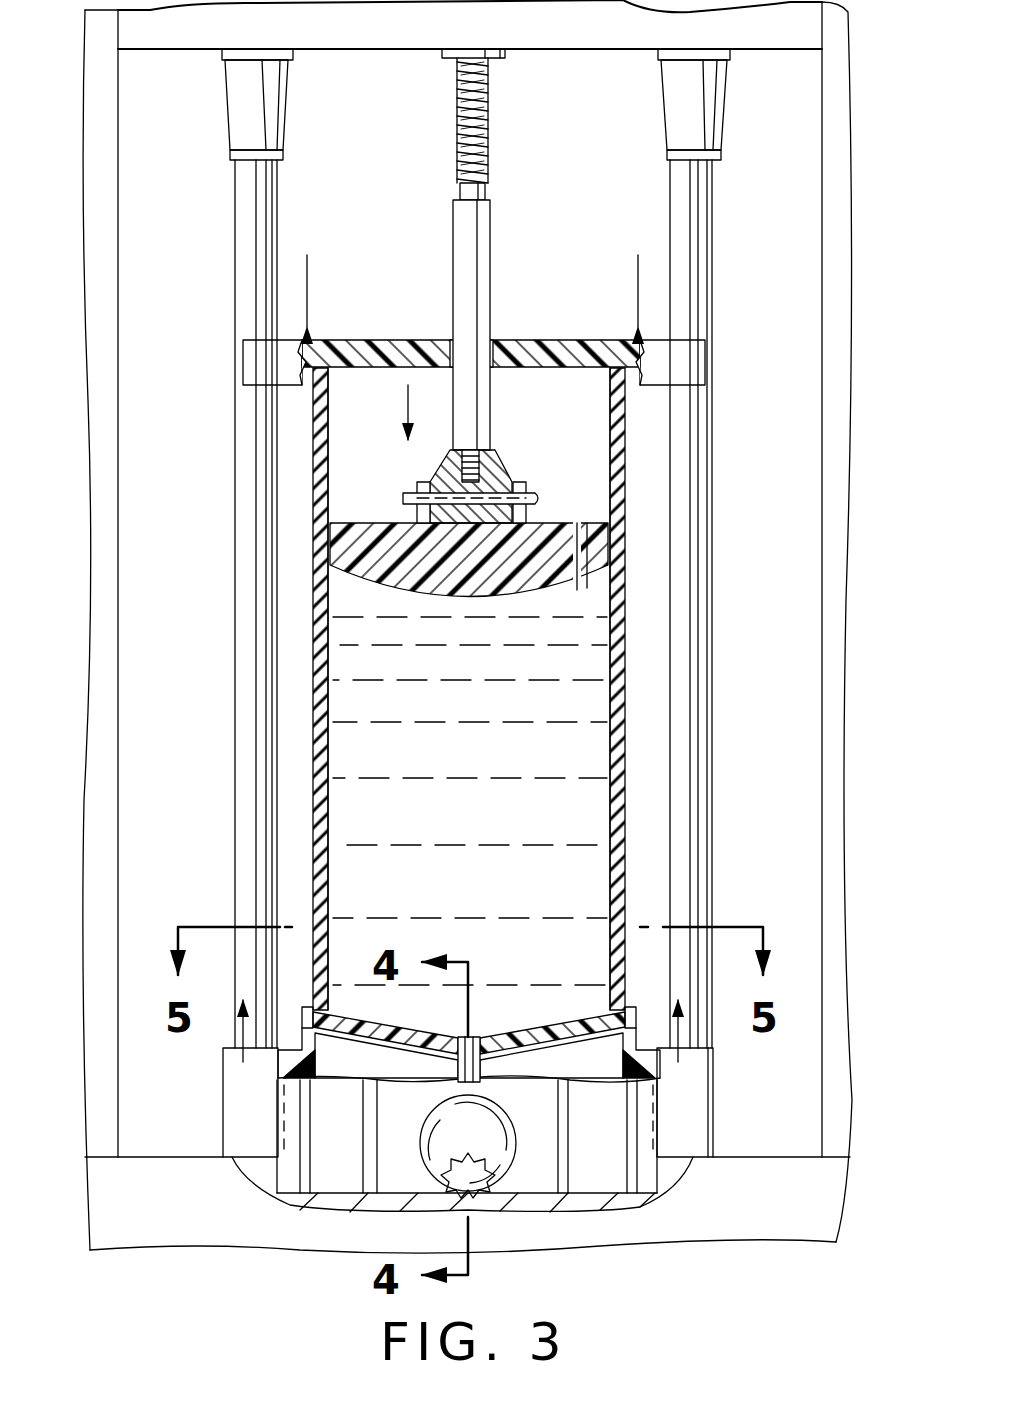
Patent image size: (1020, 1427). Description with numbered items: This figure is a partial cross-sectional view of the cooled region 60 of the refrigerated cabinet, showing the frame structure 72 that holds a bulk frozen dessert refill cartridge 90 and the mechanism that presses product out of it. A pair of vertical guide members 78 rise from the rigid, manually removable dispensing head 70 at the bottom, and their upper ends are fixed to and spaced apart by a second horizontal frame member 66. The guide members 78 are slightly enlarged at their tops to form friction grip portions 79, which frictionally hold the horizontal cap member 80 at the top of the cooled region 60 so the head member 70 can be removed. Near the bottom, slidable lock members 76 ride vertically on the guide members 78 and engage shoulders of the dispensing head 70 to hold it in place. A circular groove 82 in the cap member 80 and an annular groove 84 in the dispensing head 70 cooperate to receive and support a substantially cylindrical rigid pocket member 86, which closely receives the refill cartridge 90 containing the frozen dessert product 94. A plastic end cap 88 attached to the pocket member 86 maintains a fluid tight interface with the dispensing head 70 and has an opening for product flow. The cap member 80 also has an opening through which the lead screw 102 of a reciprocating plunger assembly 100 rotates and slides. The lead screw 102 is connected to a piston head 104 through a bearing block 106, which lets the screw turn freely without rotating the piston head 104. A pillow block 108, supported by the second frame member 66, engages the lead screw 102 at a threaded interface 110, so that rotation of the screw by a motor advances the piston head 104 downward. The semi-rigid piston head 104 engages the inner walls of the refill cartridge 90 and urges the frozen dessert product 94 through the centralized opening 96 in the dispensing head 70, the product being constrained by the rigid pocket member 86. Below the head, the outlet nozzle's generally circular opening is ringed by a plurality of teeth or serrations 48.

The teeth or serrations 48 is at (466, 1162).
The cooled region 60 is at (590, 280).
The second horizontal frame member 66 is at (492, 21).
The dispensing head 70 is at (606, 1157).
The frame structure 72 is at (430, 333).
The slidable lock members 76 is at (269, 1105).
The guide members 78 is at (236, 535).
The friction grip portions 79 is at (247, 100).
The horizontal cap member 80 is at (523, 353).
The circular groove 82 is at (330, 398).
The annular groove 84 is at (326, 1005).
The pocket member 86 is at (313, 640).
The end cap 88 is at (385, 1023).
The refill cartridge 90 is at (330, 716).
The frozen dessert product 94 is at (497, 823).
The opening 96 is at (472, 1067).
The reciprocating plunger assembly 100 is at (440, 275).
The lead screw 102 is at (478, 245).
The piston head 104 is at (538, 530).
The bearing block 106 is at (500, 450).
The pillow block 108 is at (440, 65).
The threaded interface 110 is at (488, 78).